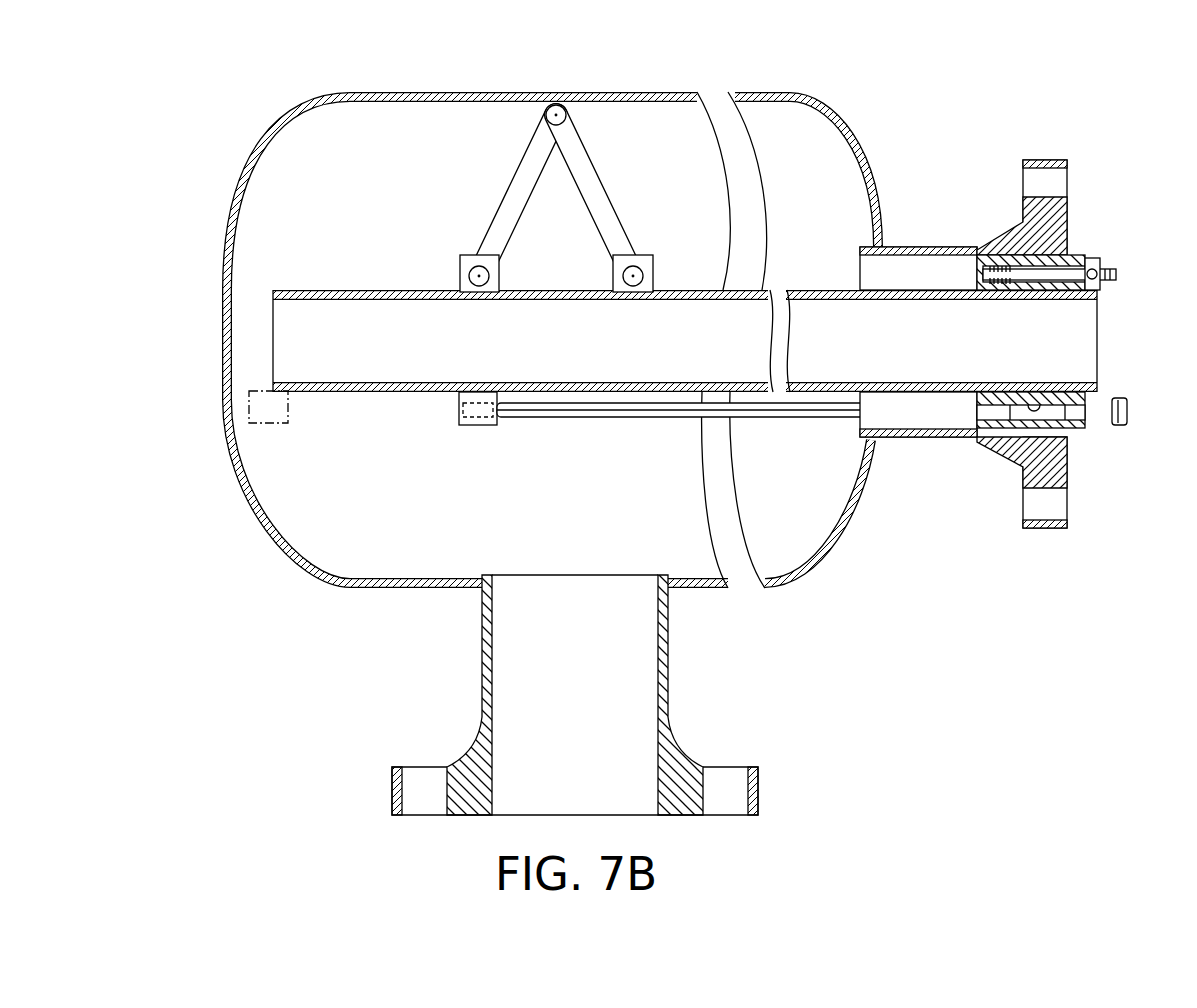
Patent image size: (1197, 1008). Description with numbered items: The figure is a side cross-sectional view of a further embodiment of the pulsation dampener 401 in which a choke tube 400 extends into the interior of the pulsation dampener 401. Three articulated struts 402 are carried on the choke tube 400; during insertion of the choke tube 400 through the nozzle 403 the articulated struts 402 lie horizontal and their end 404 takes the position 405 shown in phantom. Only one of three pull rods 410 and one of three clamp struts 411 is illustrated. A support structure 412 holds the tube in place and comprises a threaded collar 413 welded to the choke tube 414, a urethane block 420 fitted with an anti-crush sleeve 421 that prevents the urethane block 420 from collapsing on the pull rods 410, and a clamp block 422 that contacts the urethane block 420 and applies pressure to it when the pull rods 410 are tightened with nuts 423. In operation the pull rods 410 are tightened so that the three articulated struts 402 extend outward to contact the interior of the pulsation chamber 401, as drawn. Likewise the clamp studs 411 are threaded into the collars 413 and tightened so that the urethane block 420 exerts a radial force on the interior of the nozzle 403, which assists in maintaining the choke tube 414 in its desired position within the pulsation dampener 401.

The choke tube 400 is at (344, 290).
The pulsation dampener 401 is at (392, 91).
The articulated struts 402 is at (600, 189).
The nozzle 403 is at (912, 247).
The end of the articulated struts 404 is at (458, 407).
The position of the strut end 405 is at (249, 412).
The pull rods 410 is at (665, 420).
The clamp struts 411 is at (1110, 268).
The support structure 412 is at (982, 456).
The threaded collar 413 is at (975, 250).
The choke tube 414 is at (810, 290).
The urethane block 420 is at (1023, 252).
The anti-crush sleeve 421 is at (1036, 400).
The clamp block 422 is at (1072, 428).
The nuts 423 is at (1120, 397).